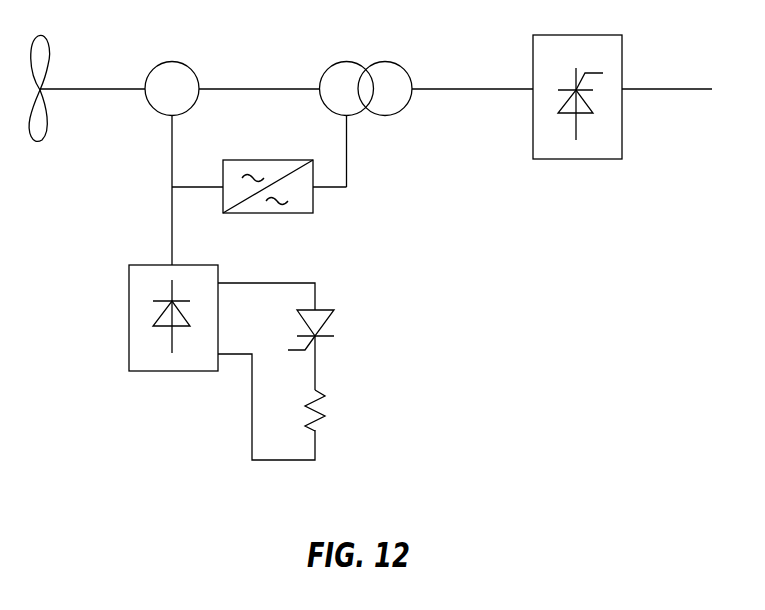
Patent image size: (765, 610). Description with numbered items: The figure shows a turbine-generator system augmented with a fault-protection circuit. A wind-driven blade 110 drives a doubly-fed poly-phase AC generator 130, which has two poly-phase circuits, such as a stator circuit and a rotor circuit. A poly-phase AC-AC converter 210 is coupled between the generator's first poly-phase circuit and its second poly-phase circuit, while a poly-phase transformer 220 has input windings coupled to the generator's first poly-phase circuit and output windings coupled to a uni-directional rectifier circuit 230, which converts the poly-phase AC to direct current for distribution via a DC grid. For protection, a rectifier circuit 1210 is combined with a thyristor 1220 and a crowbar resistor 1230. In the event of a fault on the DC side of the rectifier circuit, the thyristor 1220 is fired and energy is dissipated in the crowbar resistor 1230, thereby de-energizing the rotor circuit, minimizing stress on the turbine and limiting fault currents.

The wind-driven blade 110 is at (50, 124).
The doubly-fed AC generator 130 is at (174, 62).
The poly-phase AC-AC converter 210 is at (313, 202).
The poly-phase transformer 220 is at (400, 108).
The uni-directional rectifier circuit 230 is at (610, 159).
The rectifier circuit 1210 is at (129, 293).
The thyristor 1220 is at (322, 309).
The crowbar resistor 1230 is at (318, 440).